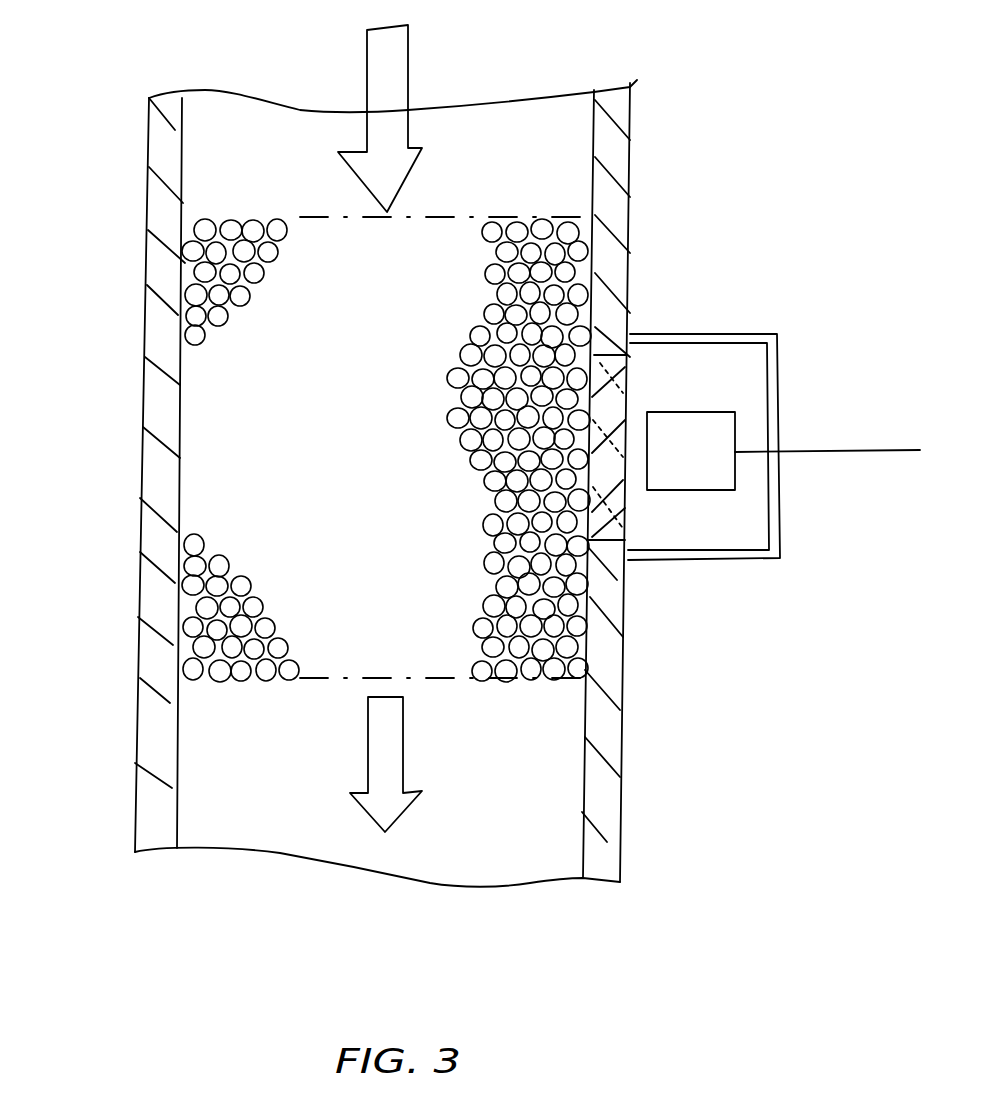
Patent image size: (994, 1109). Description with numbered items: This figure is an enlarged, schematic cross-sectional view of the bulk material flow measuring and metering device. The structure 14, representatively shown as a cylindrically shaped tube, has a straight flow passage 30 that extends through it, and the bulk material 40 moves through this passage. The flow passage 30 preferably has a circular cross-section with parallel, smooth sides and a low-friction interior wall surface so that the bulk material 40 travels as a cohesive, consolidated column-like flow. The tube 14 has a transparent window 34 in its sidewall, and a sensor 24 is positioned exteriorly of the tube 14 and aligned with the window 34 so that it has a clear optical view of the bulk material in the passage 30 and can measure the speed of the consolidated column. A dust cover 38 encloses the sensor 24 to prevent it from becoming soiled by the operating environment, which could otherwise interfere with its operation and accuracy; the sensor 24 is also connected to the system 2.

The controller / system 2 is at (837, 452).
The structure 14 is at (148, 227).
The sensor 24 is at (703, 477).
The flow passage 30 is at (208, 158).
The transparent window 34 is at (597, 473).
The dust cover 38 is at (725, 335).
The bulk material 40 is at (573, 607).